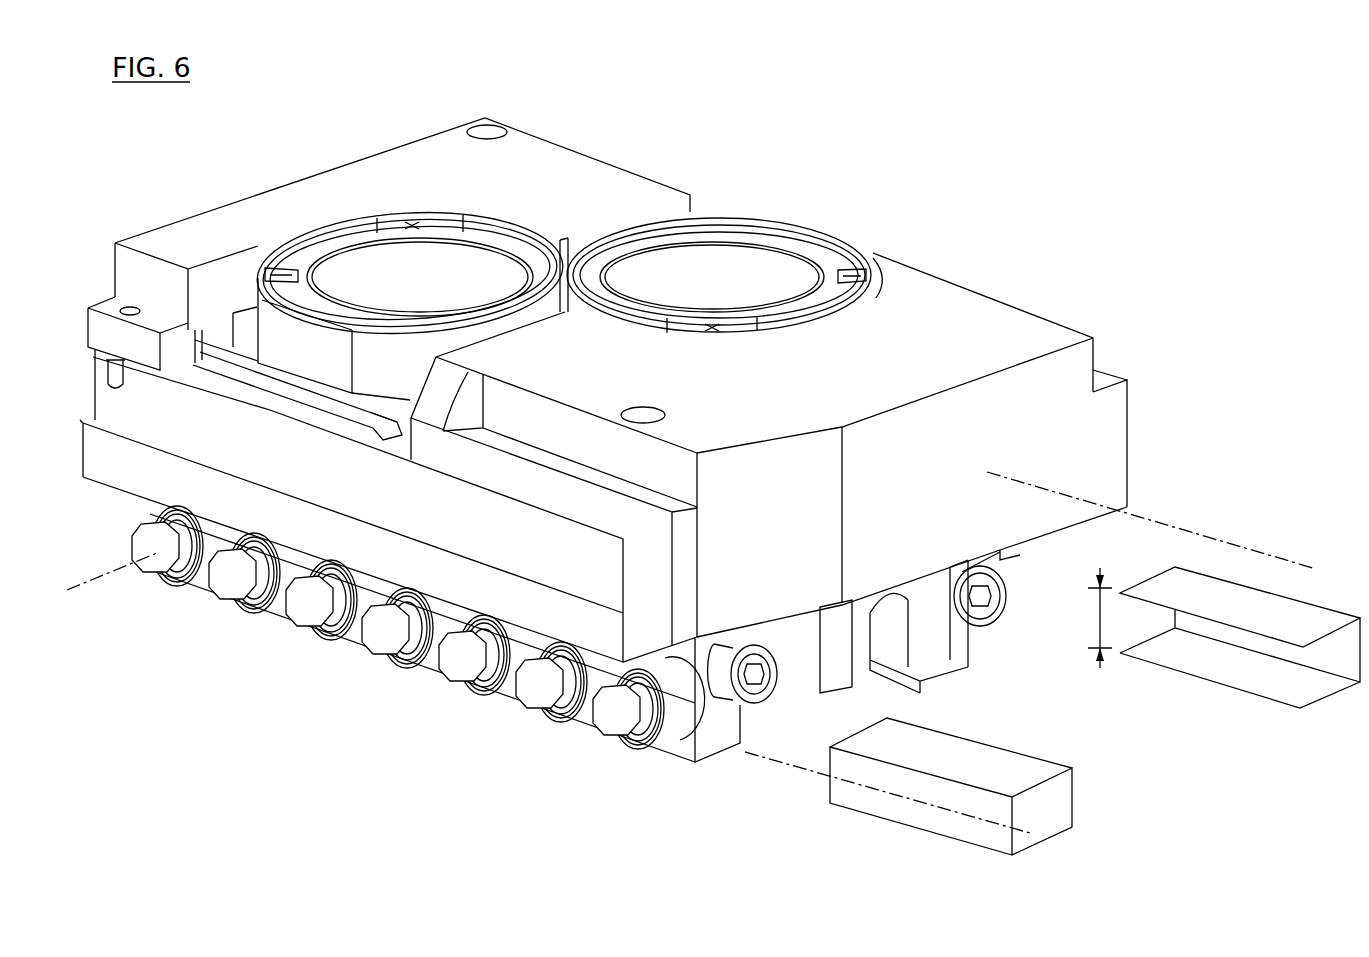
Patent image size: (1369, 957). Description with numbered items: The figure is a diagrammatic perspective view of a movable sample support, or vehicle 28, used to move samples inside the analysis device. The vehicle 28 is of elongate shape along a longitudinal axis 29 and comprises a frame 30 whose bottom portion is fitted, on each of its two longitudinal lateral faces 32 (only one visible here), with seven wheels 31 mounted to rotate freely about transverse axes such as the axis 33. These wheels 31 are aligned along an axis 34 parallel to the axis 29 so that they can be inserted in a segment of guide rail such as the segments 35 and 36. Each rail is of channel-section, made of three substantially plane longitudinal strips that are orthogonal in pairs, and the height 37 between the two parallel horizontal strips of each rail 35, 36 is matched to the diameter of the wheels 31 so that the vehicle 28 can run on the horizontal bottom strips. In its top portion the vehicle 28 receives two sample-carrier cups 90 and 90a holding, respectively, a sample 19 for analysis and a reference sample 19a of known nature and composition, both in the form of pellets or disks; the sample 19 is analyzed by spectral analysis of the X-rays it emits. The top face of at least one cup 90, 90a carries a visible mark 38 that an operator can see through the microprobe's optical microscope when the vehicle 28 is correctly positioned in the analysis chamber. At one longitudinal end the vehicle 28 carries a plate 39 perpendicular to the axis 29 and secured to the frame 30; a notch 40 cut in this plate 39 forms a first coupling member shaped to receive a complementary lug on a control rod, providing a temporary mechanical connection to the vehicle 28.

The vehicle 28 is at (1043, 182).
The visible mark 38 is at (420, 220).
The sample of known nature and composition 19a is at (402, 277).
The sample-carrier cup 90a is at (288, 255).
The sample 19 is at (728, 263).
The sample-carrier cup 90 is at (845, 263).
The frame 30 is at (75, 463).
The wheels 31 is at (263, 607).
The longitudinal lateral face 32 is at (683, 753).
The transverse axis 33 is at (97, 580).
The axis 34 is at (767, 753).
The longitudinal axis 29 is at (1197, 533).
The guide rail segment 35 is at (1063, 830).
The guide rail segment 36 is at (1268, 697).
The height 37 is at (1089, 618).
The plate 39 is at (932, 637).
The notch 40 is at (898, 665).